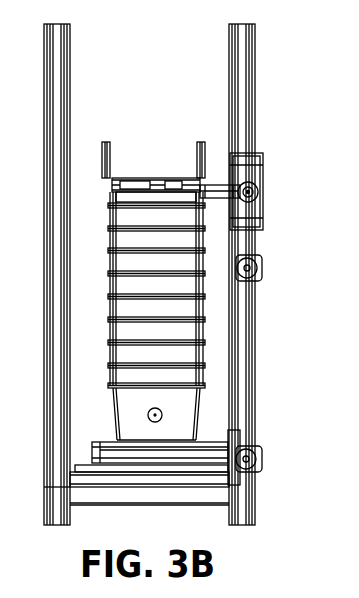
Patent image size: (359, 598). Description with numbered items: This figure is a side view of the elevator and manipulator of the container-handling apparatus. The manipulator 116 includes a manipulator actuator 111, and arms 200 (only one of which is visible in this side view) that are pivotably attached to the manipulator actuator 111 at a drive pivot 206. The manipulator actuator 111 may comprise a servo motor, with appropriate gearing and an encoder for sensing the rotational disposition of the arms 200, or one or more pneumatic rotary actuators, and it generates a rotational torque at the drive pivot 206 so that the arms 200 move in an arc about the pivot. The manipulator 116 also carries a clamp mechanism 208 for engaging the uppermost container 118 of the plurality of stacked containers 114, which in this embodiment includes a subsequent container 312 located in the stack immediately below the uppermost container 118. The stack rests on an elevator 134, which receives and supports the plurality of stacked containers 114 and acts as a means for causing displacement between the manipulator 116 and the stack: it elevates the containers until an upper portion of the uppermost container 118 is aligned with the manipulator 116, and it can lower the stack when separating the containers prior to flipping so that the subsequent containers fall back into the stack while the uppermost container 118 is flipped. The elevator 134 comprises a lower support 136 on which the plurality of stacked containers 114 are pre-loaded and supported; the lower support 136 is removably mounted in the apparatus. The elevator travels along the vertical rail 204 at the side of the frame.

The vertical rail 204 is at (255, 63).
The clamp mechanism 208 is at (94, 185).
The manipulator 116 is at (215, 169).
The manipulator actuator 111 is at (252, 168).
The drive pivot 206 is at (258, 192).
The arms 200 is at (218, 195).
The uppermost container 118 is at (128, 197).
The subsequent container 312 is at (128, 218).
The plurality of stacked containers 114 is at (112, 264).
The elevator 134 is at (103, 438).
The lower support 136 is at (100, 458).